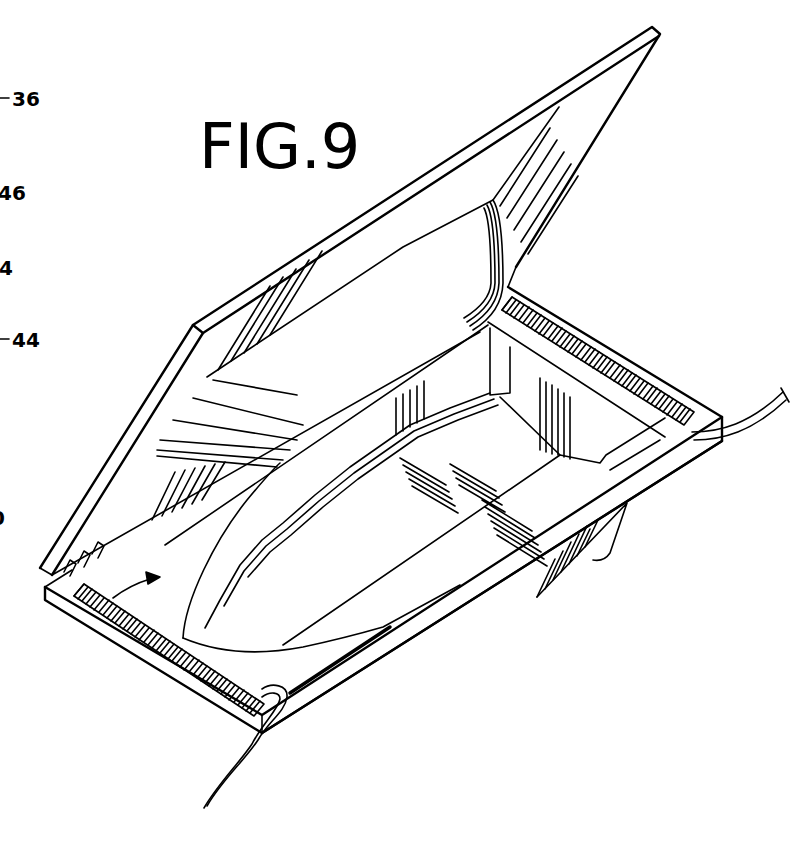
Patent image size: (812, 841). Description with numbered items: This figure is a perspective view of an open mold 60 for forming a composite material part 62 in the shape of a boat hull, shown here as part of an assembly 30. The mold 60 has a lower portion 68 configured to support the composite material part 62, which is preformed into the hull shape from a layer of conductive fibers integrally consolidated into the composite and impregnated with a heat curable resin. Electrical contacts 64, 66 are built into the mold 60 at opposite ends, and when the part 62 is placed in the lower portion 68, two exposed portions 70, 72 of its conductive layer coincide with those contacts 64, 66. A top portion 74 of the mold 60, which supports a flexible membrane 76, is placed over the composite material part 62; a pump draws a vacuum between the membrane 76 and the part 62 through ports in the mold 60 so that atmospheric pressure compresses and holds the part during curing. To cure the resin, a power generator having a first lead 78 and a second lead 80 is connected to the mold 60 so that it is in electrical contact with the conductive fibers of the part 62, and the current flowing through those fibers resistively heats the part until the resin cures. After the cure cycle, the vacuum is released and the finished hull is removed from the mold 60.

The battery charging apparatus 30 is at (0, 770).
The open mold 60 is at (152, 686).
The composite material part 62 is at (97, 607).
The electrical contact 64 is at (310, 696).
The electrical contact 66 is at (683, 440).
The lower portion 68 is at (659, 482).
The exposed portion 70 is at (150, 650).
The exposed portion 72 is at (613, 370).
The top portion 74 is at (553, 148).
The flexible membrane 76 is at (456, 290).
The first lead 78 is at (215, 773).
The second lead 80 is at (753, 393).